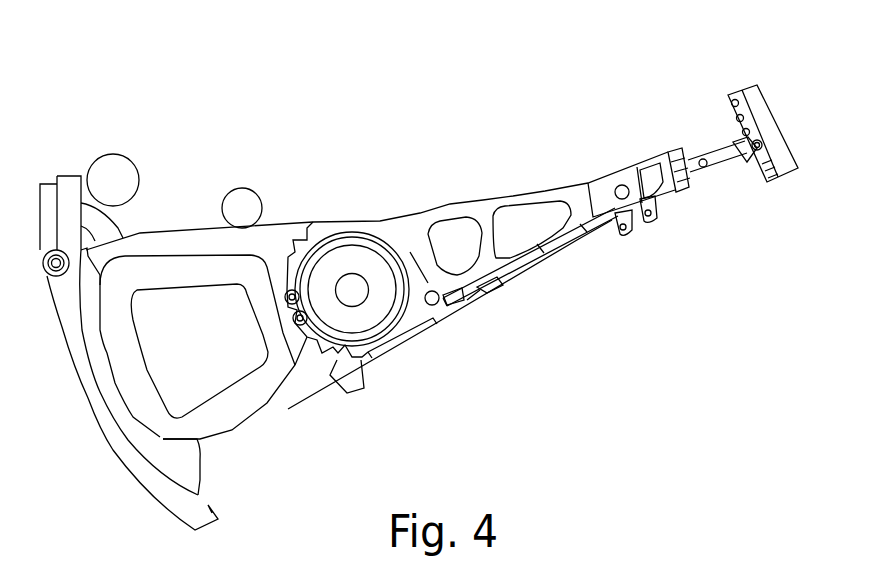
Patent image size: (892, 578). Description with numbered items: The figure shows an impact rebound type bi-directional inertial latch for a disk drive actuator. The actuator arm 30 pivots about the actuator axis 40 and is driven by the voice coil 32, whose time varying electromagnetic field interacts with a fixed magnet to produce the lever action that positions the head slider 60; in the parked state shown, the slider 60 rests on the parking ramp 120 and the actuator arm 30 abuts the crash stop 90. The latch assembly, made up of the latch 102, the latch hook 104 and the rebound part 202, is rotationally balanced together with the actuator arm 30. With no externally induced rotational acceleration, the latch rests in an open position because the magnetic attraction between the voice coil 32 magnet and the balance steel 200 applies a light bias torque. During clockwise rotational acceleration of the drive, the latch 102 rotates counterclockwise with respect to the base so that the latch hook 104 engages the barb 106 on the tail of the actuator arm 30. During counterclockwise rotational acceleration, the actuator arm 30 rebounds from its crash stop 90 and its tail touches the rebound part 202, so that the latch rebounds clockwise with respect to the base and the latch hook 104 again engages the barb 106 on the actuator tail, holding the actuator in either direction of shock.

The actuator arm 30 is at (492, 201).
The voice coil 32 is at (211, 402).
The actuator axis 40 is at (358, 274).
The head slider 60 is at (627, 234).
The crash stop 90 is at (250, 190).
The latch 102 is at (43, 278).
The latch hook 104 is at (215, 518).
The barb 106 is at (200, 482).
The parking ramp 120 is at (777, 123).
The balance steel 200 is at (47, 186).
The rebound part 202 is at (115, 228).